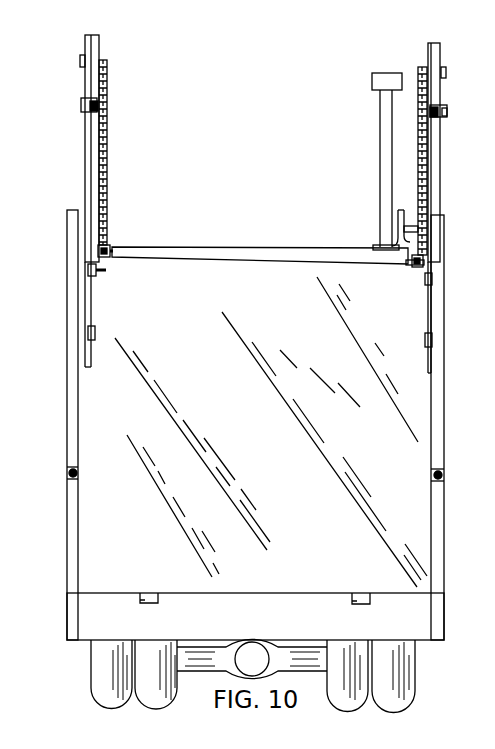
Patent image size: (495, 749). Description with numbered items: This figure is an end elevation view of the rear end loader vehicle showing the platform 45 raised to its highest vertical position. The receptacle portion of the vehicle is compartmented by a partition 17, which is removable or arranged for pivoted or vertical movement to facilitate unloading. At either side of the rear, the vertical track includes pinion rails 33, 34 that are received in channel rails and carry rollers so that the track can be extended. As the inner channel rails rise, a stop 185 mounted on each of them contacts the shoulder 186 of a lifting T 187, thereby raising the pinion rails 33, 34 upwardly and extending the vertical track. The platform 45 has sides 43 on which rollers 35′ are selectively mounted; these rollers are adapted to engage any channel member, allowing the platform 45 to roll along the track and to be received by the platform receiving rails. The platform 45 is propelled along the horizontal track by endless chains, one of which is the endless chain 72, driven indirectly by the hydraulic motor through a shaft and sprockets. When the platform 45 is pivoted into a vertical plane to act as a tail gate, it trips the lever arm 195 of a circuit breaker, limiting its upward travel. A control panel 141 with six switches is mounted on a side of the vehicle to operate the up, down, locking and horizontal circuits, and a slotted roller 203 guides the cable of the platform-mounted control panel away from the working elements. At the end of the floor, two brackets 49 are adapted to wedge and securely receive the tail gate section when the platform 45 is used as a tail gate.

The partition 17 is at (248, 433).
The pinion rail 33 is at (99, 37).
The pinion rail 34 is at (440, 46).
The stop 185 is at (93, 110).
The shoulder 186 is at (96, 102).
The lifting T 187 is at (78, 100).
The endless chain 72 is at (468, 119).
The side 43 is at (204, 247).
The platform 45 is at (277, 240).
The roller 35′ is at (105, 256).
The lever arm 195 is at (100, 278).
The control panel 141 is at (373, 74).
The slotted roller 203 is at (396, 212).
The bracket 49 is at (144, 603).